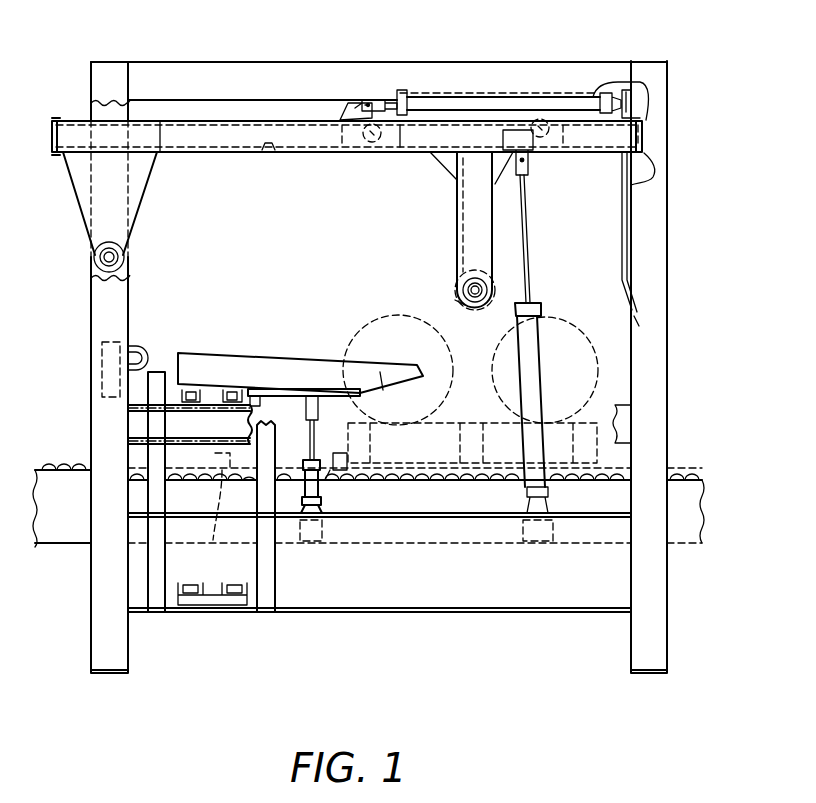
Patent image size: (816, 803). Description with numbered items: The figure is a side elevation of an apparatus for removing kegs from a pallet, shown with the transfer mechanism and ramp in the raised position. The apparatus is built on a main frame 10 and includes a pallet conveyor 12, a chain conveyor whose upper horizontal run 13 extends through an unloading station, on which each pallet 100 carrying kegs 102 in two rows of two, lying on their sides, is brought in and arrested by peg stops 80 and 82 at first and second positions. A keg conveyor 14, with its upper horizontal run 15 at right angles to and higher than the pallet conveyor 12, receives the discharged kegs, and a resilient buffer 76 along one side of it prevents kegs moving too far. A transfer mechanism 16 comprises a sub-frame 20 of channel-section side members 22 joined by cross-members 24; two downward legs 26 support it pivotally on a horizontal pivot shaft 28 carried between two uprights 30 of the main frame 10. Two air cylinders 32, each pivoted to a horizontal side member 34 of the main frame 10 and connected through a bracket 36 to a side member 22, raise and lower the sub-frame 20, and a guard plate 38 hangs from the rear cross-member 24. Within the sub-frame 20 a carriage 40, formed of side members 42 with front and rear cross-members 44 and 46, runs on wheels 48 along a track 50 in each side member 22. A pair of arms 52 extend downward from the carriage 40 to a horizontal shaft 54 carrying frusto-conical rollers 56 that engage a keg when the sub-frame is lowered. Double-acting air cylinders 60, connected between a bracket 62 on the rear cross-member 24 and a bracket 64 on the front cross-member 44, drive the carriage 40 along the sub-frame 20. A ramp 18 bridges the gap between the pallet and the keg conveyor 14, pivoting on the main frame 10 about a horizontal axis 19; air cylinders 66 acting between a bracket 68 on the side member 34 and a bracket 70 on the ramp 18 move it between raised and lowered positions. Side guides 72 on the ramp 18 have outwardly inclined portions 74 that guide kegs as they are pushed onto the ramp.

The main frame 10 is at (230, 73).
The pallet conveyor 12 is at (60, 470).
The upper horizontal run 13 is at (613, 468).
The keg conveyor 14 is at (218, 383).
The upper horizontal run 15 is at (196, 388).
The transfer mechanism 16 is at (287, 113).
The ramp 18 is at (298, 370).
The horizontal axis 19 is at (262, 403).
The sub-frame 20 is at (182, 134).
The side members 22 is at (242, 140).
The cross-members 24 is at (60, 135).
The legs 26 is at (143, 163).
The pivot shaft 28 is at (121, 251).
The uprights 30 is at (97, 322).
The air cylinders 32 is at (540, 340).
The side member 34 is at (600, 580).
The bracket 36 is at (531, 160).
The guard plate 38 is at (629, 240).
The carriage 40 is at (405, 138).
The side members 42 is at (430, 130).
The front cross-member 44 is at (330, 143).
The rear cross-member 46 is at (653, 167).
The wheels 48 is at (368, 146).
The track 50 is at (270, 152).
The arms 52 is at (472, 184).
The horizontal shaft 54 is at (475, 305).
The rollers 56 is at (462, 280).
The double-acting air cylinders 60 is at (505, 103).
The bracket 62 is at (637, 112).
The bracket 64 is at (352, 105).
The air cylinders 66 is at (340, 471).
The bracket 68 is at (305, 500).
The bracket 70 is at (306, 406).
The side guides 72 is at (322, 385).
The portions 74 is at (383, 372).
The buffer 76 is at (140, 345).
The peg stop 80 is at (345, 478).
The peg stop 82 is at (212, 529).
The pallet 100 is at (450, 490).
The kegs 102 is at (552, 305).